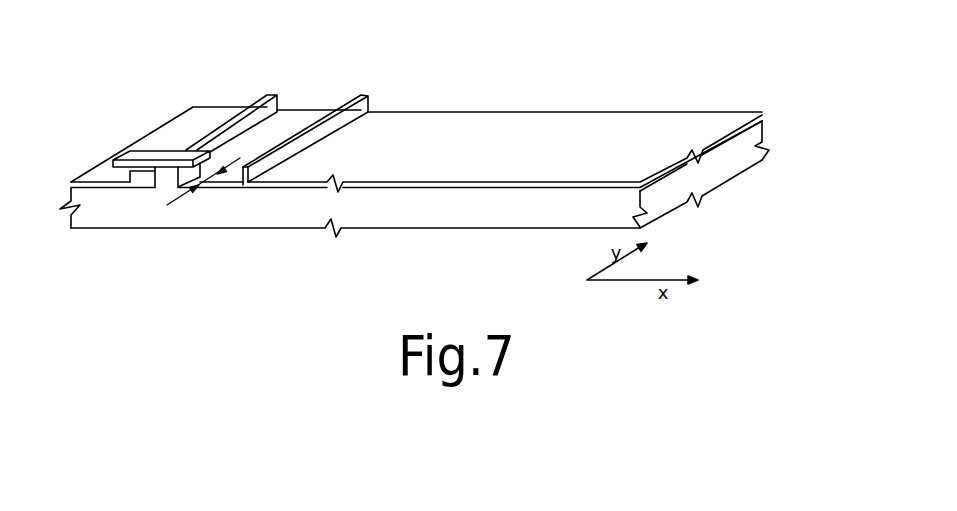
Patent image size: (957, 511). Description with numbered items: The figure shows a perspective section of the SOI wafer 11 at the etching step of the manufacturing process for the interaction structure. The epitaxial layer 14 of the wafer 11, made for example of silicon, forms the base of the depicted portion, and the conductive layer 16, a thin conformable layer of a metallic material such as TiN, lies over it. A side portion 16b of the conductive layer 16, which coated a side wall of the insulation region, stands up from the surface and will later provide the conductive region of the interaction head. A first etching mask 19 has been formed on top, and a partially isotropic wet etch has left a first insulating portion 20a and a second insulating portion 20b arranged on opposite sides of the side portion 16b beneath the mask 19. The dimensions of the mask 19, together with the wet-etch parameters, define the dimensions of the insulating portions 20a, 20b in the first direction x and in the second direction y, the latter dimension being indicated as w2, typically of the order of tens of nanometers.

The wafer of semiconductor material on insulator 11 is at (461, 168).
The epitaxial layer 14 is at (670, 202).
The conductive layer 16 is at (450, 126).
The side portion of the conductive layer 16b is at (264, 118).
The first etching mask 19 is at (167, 157).
The first insulating portion 20a is at (168, 177).
The second insulating portion 20b is at (131, 175).
The width of post 20a w2 is at (213, 180).